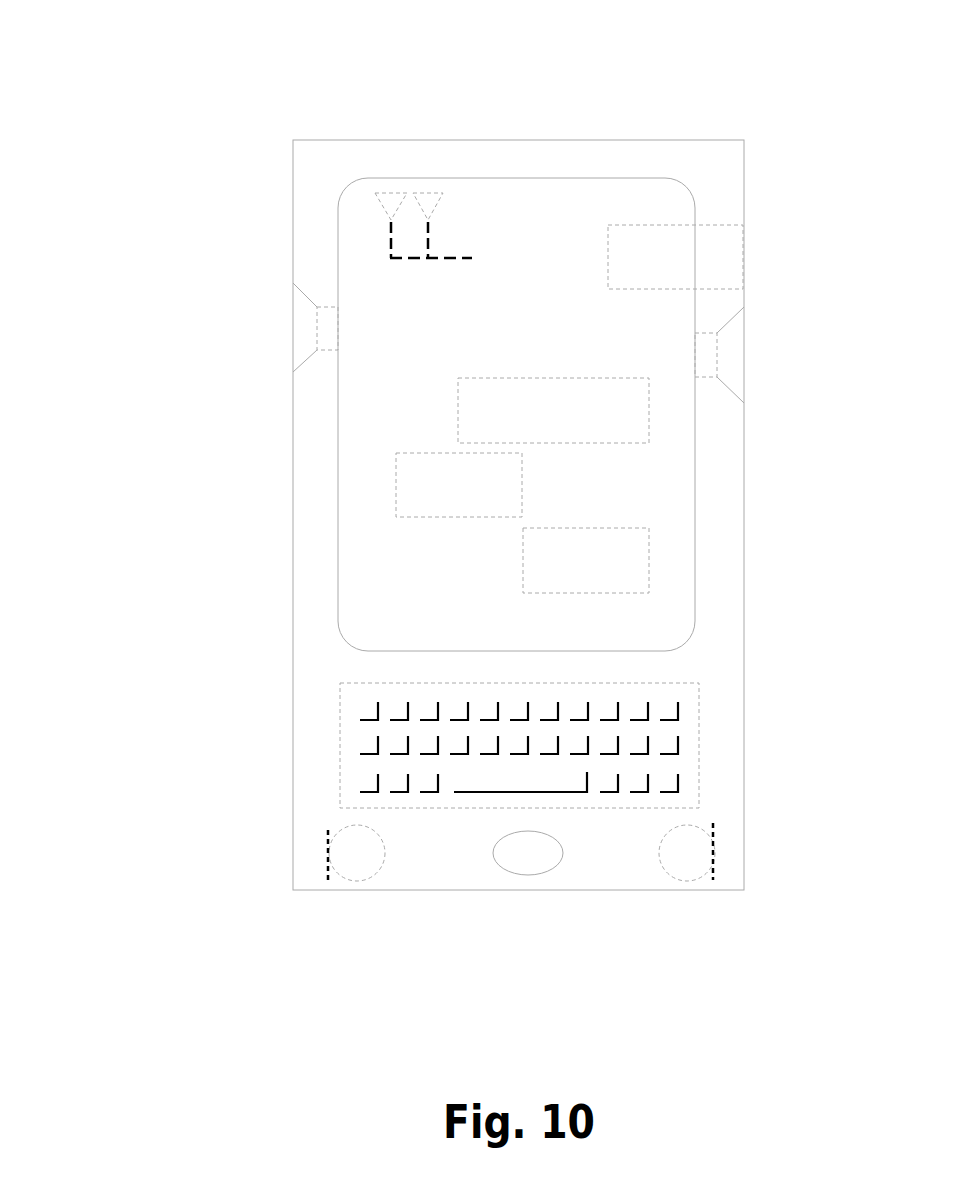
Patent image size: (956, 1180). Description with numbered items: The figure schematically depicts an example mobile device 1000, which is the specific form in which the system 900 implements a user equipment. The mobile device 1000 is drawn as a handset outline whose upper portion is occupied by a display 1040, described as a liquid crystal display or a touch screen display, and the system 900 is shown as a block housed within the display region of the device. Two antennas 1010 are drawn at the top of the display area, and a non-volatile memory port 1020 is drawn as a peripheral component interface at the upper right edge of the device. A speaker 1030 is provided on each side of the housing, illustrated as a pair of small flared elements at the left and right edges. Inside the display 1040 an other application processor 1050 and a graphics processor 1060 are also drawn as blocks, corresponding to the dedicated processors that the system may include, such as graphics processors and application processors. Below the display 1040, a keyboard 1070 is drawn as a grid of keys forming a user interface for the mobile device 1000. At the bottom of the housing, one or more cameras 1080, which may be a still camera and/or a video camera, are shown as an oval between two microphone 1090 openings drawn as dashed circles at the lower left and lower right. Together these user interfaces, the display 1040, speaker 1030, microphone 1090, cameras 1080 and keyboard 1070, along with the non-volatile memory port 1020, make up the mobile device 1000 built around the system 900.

The mobile device 1000 is at (218, 97).
The antennas 1010 is at (427, 193).
The non-volatile memory port 1020 is at (745, 245).
The speaker 1030 is at (734, 355).
The display 1040 is at (694, 576).
The other application processor 1050 is at (583, 443).
The graphics processor 1060 is at (435, 517).
The system 900 is at (586, 560).
The keyboard 1070 is at (665, 683).
The cameras 1080 is at (505, 870).
The microphone 1090 is at (348, 882).